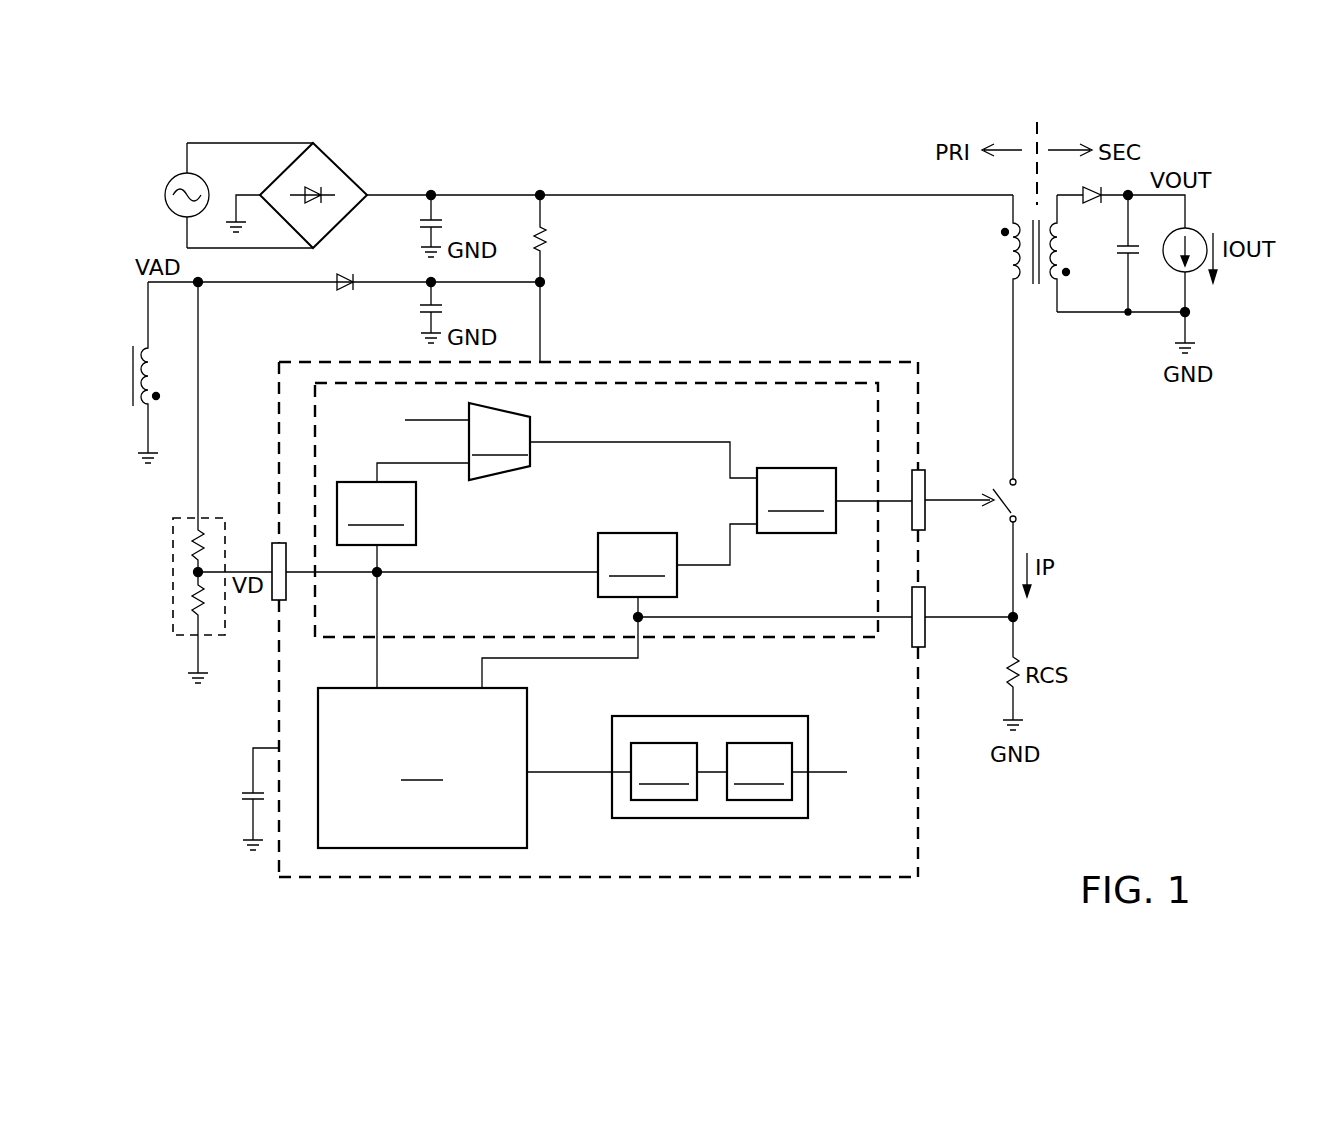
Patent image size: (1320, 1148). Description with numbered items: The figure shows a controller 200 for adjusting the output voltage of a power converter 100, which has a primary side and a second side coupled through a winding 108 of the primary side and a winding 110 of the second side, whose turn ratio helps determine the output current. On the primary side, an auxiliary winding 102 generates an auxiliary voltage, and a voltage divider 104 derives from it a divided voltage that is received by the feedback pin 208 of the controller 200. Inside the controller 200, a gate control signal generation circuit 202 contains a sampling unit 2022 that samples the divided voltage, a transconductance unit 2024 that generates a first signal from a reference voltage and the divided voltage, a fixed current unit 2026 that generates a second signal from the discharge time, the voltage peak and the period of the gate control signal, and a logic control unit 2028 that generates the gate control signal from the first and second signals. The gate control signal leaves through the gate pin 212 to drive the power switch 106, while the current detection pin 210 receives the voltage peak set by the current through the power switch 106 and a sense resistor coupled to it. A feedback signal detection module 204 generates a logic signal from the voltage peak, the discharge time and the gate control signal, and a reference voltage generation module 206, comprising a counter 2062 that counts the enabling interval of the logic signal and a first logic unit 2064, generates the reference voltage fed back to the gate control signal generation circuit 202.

The power converter 100 is at (776, 152).
The auxiliary winding 102 is at (150, 374).
The voltage divider 104 is at (175, 612).
The power switch 106 is at (1018, 500).
The winding of the primary side 108 is at (1006, 257).
The winding of the second side 110 is at (1050, 287).
The controller 200 is at (700, 361).
The gate control signal generation circuit 202 is at (812, 640).
The feedback signal detection module 204 is at (422, 768).
The reference voltage generation module 206 is at (729, 738).
The feedback pin 208 is at (271, 552).
The current detection pin 210 is at (925, 636).
The gate pin 212 is at (925, 480).
The sampling unit 2022 is at (376, 513).
The transconductance unit 2024 is at (499, 441).
The fixed current unit 2026 is at (637, 565).
The logic control unit 2028 is at (796, 500).
The counter 2062 is at (664, 771).
The first logic unit 2064 is at (759, 771).